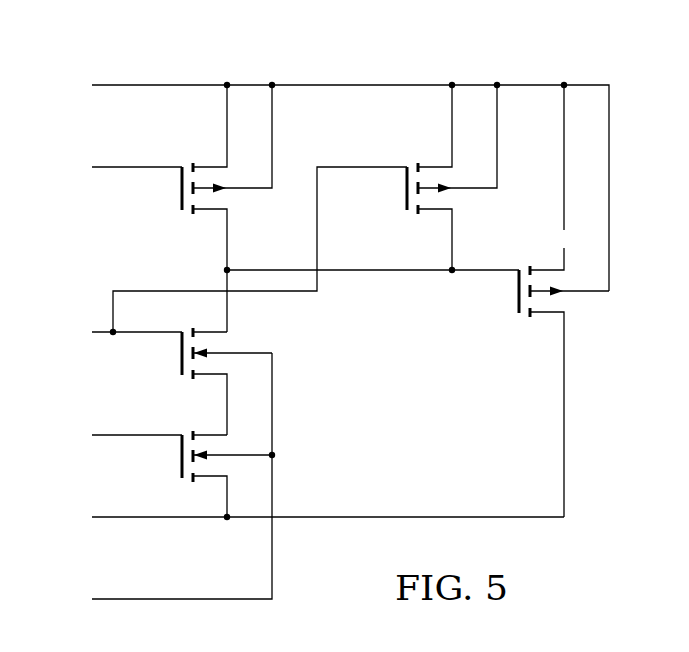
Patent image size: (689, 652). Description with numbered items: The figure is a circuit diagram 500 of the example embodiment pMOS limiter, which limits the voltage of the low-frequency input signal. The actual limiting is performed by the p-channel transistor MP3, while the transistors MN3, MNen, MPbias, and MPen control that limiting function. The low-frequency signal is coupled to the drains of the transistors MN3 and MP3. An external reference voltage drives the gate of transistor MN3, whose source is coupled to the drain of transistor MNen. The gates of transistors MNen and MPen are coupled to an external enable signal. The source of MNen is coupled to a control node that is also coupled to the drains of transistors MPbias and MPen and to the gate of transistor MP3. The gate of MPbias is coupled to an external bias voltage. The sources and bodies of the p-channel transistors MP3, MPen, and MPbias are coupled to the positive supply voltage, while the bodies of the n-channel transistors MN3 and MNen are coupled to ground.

The circuit diagram 500 is at (473, 54).
The transistor MPbias is at (189, 208).
The transistor MPen is at (305, 208).
The transistor MP3 is at (539, 301).
The transistor MNen is at (196, 381).
The transistor MN3 is at (201, 474).